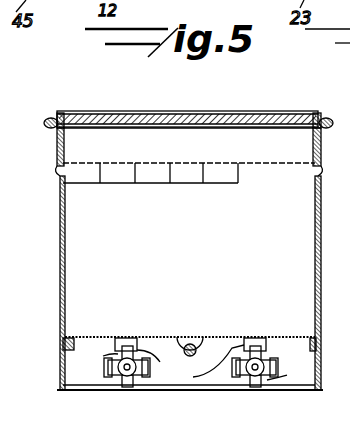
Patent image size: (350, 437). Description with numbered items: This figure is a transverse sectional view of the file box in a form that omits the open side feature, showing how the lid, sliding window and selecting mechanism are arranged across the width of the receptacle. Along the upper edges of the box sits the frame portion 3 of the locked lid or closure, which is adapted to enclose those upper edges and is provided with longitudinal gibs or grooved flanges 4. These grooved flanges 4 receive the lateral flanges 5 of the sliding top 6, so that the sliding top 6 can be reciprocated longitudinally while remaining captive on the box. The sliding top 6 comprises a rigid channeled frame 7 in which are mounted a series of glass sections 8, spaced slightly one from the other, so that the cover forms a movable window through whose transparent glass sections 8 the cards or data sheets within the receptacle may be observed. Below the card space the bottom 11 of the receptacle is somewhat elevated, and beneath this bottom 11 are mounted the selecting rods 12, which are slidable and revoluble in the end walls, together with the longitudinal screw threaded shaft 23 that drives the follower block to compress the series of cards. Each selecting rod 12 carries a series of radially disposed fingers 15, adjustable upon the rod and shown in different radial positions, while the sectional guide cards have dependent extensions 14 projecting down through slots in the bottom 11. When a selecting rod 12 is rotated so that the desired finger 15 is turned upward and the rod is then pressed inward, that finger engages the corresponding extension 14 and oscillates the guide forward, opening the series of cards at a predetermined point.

The frame portion 3 is at (57, 150).
The longitudinal gibs or grooved flanges 4 is at (44, 123).
The lateral flanges 5 is at (52, 114).
The sliding top 6 is at (146, 111).
The rigid channeled frame 7 is at (319, 117).
The glass sections 8 is at (259, 119).
The bottom 11 is at (115, 322).
The selecting rod 12 is at (115, 386).
The dependent extension 14 is at (195, 369).
The radially disposed fingers 15 is at (108, 368).
The longitudinal screw threaded shaft 23 is at (190, 344).